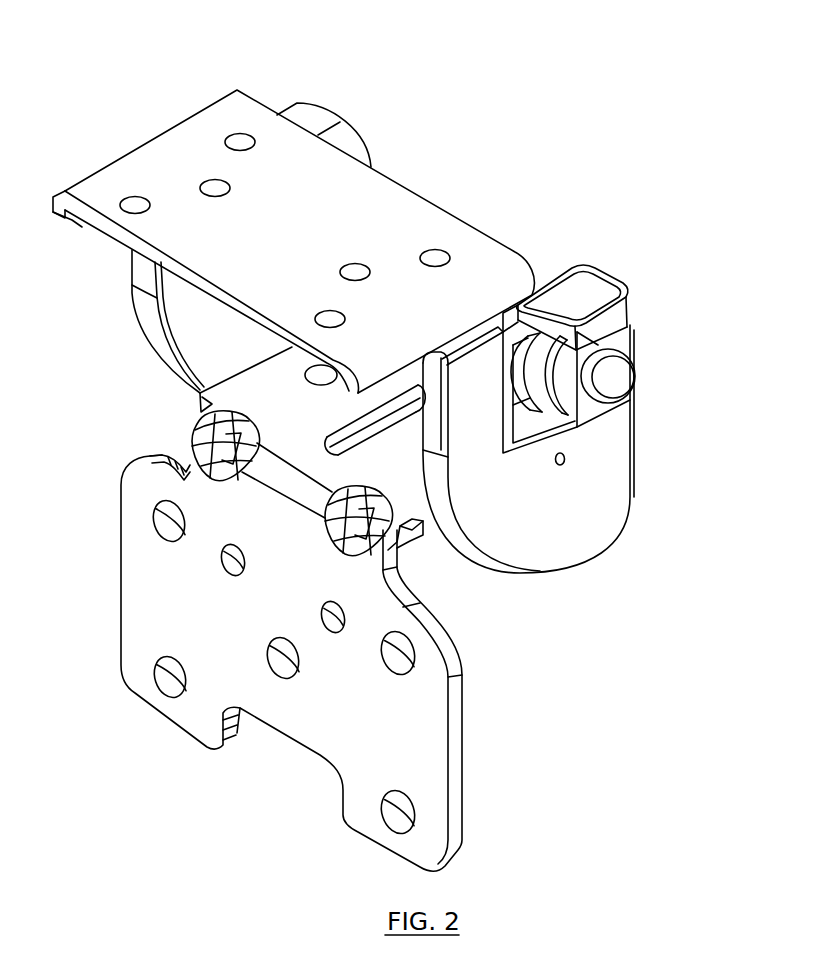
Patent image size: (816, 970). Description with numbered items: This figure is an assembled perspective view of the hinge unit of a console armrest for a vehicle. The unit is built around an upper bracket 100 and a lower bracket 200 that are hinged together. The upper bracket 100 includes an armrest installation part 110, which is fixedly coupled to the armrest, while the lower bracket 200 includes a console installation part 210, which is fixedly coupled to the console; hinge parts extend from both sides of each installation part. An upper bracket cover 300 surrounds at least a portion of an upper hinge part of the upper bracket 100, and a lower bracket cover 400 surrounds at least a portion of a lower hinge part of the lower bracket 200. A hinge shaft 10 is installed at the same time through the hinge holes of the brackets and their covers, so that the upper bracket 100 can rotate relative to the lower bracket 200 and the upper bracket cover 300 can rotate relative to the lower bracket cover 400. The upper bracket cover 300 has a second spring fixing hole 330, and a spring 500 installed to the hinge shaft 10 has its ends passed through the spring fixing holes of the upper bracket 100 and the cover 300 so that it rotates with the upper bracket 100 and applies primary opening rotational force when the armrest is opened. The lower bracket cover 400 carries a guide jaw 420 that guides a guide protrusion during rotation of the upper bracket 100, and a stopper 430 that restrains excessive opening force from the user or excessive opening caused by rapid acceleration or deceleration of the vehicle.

The upper bracket 100 is at (147, 125).
The armrest installation part 110 is at (280, 193).
The lower bracket 200 is at (98, 508).
The console installation part 210 is at (408, 740).
The upper bracket cover 300 is at (547, 532).
The second spring fixing hole 330 is at (563, 467).
The lower bracket cover 400 is at (640, 282).
The guide jaw 420 is at (560, 375).
The stopper 430 is at (598, 292).
The hinge shaft 10 is at (610, 378).
The spring 500 is at (568, 460).